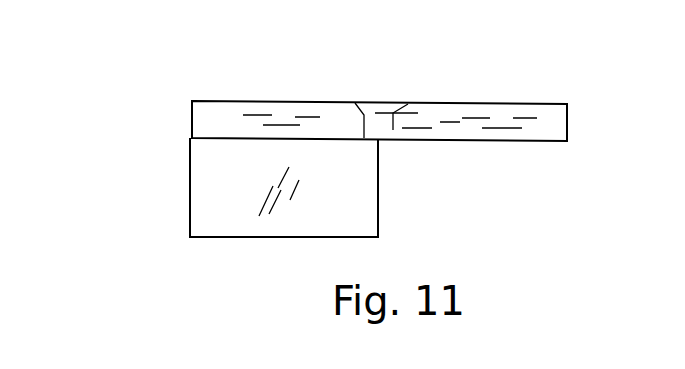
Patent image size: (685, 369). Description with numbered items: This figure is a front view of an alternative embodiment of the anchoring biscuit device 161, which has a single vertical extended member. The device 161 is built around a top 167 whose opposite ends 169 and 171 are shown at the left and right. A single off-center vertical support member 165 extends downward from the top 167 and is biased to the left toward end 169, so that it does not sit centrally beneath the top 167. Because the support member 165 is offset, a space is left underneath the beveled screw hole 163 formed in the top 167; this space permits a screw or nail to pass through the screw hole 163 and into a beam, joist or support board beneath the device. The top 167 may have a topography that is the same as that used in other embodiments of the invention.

The device 161 is at (212, 70).
The beveled screw hole 163 is at (368, 103).
The single off-center vertical support member 165 is at (205, 173).
The top 167 is at (480, 112).
The end 169 is at (190, 128).
The end 171 is at (567, 125).